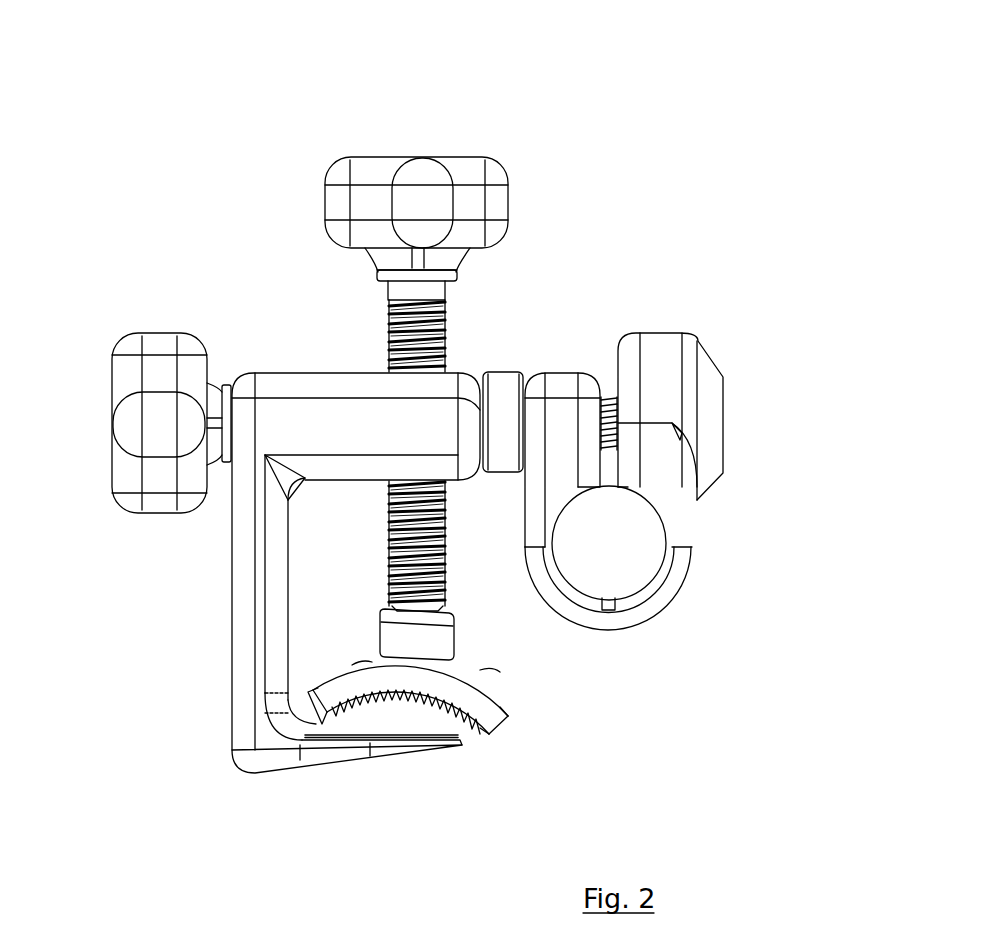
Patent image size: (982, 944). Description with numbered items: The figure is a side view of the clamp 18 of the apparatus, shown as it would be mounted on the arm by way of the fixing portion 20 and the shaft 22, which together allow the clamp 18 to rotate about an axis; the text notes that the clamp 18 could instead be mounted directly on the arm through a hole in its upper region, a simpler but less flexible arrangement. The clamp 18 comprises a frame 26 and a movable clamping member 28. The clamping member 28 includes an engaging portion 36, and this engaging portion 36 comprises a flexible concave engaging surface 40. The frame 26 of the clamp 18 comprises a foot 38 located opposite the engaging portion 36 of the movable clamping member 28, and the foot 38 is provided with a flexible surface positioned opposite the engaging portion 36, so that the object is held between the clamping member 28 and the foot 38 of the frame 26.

The clamp 18 is at (123, 638).
The fixing portion 20 is at (713, 403).
The shaft 22 is at (608, 395).
The frame 26 is at (297, 377).
The movable clamping member 28 is at (413, 160).
The engaging portion 36 is at (507, 705).
The foot 38 is at (322, 758).
The flexible concave engaging surface 40 is at (402, 705).